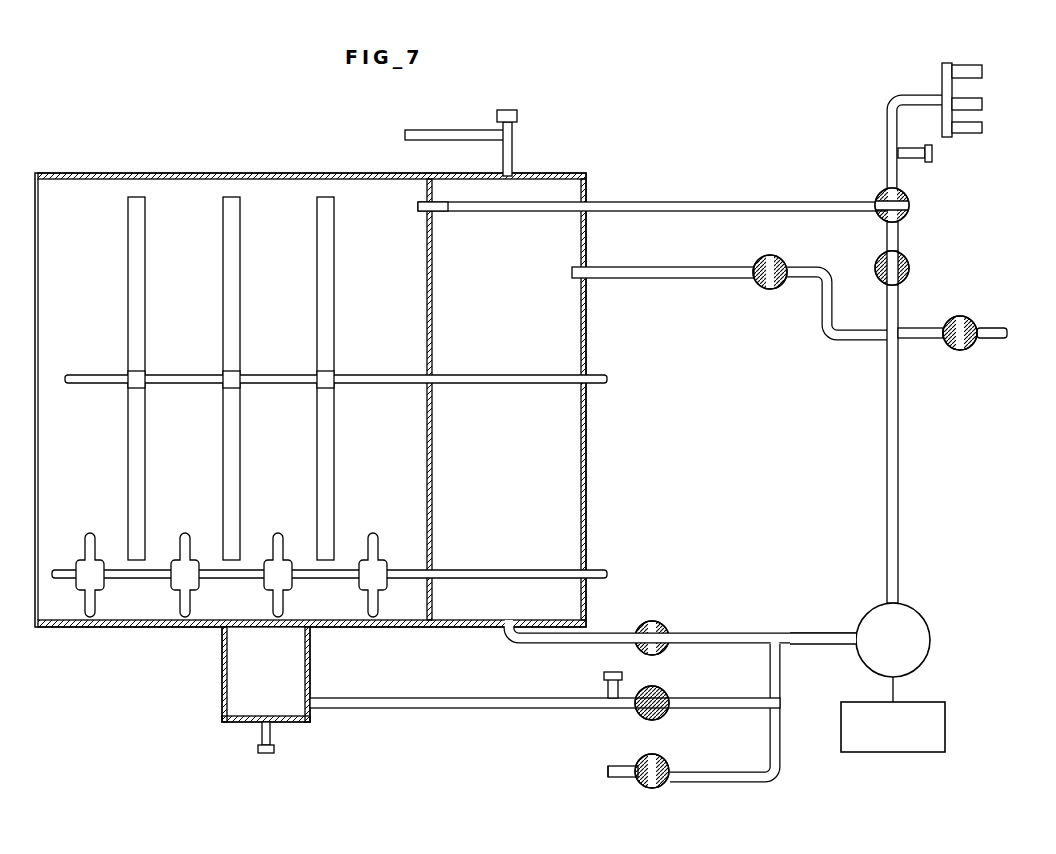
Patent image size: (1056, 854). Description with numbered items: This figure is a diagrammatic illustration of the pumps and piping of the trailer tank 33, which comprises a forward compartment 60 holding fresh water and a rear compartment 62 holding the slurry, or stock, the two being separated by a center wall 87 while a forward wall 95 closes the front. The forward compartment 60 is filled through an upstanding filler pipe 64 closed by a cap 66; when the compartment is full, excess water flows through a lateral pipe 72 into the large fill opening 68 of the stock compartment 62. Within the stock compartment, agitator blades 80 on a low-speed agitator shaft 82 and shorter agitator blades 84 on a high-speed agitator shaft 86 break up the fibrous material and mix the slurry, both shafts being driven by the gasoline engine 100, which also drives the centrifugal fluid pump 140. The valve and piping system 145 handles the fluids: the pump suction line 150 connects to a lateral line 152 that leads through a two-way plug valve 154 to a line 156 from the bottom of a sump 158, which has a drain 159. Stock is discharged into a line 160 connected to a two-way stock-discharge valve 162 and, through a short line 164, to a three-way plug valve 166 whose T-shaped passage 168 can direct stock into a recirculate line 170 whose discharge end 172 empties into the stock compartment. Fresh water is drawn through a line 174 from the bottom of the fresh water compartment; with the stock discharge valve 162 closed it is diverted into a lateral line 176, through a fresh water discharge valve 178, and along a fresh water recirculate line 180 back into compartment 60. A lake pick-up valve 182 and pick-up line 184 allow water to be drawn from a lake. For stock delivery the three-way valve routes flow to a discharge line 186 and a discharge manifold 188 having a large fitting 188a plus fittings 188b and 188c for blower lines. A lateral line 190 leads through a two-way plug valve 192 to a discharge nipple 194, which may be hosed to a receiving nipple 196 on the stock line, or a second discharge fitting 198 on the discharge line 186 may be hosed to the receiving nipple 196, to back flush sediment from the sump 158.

The tank 33 is at (338, 362).
The forward compartment 60 is at (495, 311).
The rear compartment 62 is at (75, 279).
The filler pipe 64 is at (512, 150).
The cap 66 is at (517, 116).
The opening 68 is at (200, 176).
The lateral pipe 72 is at (442, 130).
The agitator blades 80 is at (228, 244).
The low-speed agitator shaft 82 is at (190, 385).
The shorter agitator blades 84 is at (96, 598).
The high-speed agitator shaft 86 is at (75, 573).
The center wall 87 is at (433, 450).
The forward wall 95 is at (587, 453).
The gasoline engine 100 is at (930, 702).
The fluid pump 140 is at (921, 617).
The valve and piping system 145 is at (920, 252).
The suction line 150 is at (805, 633).
The lateral line 152 is at (781, 688).
The two-way plug valve 154 is at (664, 690).
The line 156 is at (414, 698).
The sump 158 is at (311, 660).
The drain 159 is at (271, 738).
The line 160 is at (887, 486).
The two-way stock-discharge valve 162 is at (876, 272).
The short line 164 is at (887, 236).
The three-way plug valve 166 is at (878, 196).
The T-shaped passage 168 is at (910, 206).
The recirculate line 170 is at (688, 202).
The fresh water valve 172 is at (418, 207).
The line 174 is at (547, 645).
The lateral line 176 is at (822, 310).
The fresh water discharge valve 178 is at (762, 286).
The fresh water recirculate line 180 is at (688, 279).
The lake pick-up valve 182 is at (665, 758).
The pick-up line 184 is at (612, 766).
The discharge line 186 is at (898, 176).
The discharge manifold 188 is at (942, 84).
The fitting 188a is at (966, 68).
The fitting 188b is at (966, 103).
The fitting 188c is at (966, 128).
The lateral line 190 is at (924, 344).
The two-way plug valve 192 is at (953, 318).
The discharge nipple 194 is at (994, 344).
The receiving nipple 196 is at (605, 680).
The second discharge fitting 198 is at (926, 150).